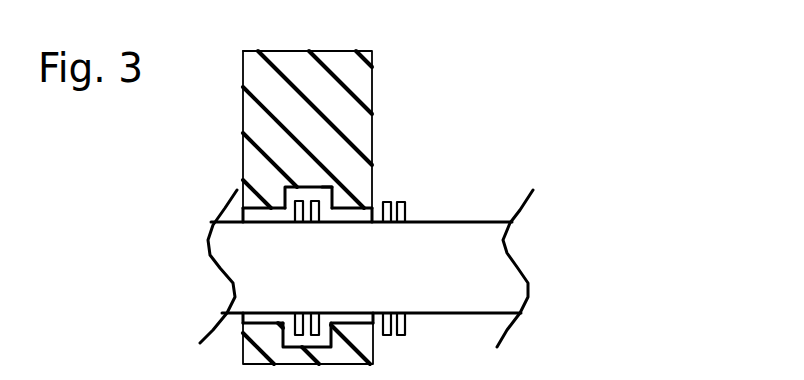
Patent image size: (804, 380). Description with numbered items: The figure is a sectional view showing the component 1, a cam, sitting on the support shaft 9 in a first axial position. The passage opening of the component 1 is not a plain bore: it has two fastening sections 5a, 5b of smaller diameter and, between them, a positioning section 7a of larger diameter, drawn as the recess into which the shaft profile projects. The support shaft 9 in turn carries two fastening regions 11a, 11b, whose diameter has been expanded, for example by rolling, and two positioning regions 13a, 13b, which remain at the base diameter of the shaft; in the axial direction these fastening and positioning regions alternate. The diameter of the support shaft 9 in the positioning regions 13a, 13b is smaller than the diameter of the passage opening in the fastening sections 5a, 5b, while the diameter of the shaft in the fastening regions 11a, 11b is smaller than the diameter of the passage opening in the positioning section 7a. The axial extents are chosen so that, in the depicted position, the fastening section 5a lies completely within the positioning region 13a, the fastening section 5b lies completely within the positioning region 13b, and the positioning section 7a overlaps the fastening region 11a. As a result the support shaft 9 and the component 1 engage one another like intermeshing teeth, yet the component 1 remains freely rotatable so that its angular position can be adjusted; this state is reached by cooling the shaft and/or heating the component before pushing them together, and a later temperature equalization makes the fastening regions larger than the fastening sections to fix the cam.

The component 1 is at (361, 88).
The fastening section 5a is at (257, 207).
The fastening section 5b is at (348, 208).
The positioning section 7a is at (301, 186).
The support shaft 9 is at (475, 273).
The fastening region 11a is at (325, 186).
The fastening region 11b is at (370, 220).
The positioning region 13a is at (265, 221).
The positioning region 13b is at (383, 204).